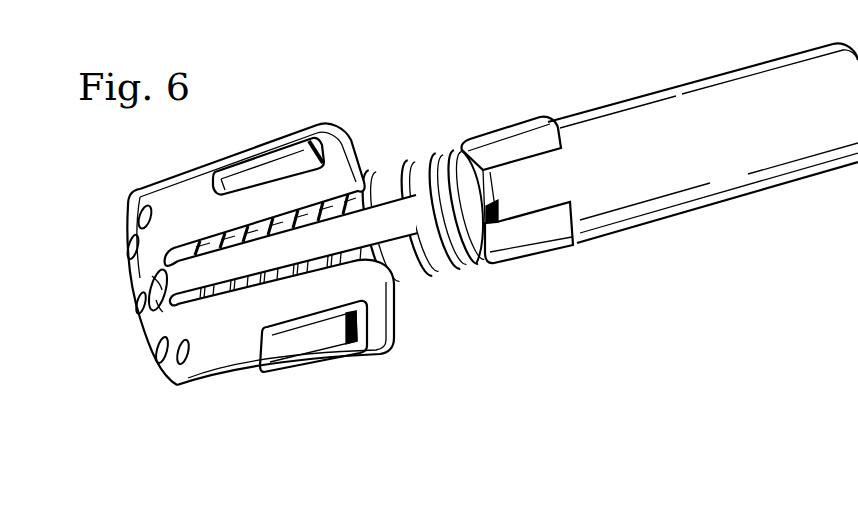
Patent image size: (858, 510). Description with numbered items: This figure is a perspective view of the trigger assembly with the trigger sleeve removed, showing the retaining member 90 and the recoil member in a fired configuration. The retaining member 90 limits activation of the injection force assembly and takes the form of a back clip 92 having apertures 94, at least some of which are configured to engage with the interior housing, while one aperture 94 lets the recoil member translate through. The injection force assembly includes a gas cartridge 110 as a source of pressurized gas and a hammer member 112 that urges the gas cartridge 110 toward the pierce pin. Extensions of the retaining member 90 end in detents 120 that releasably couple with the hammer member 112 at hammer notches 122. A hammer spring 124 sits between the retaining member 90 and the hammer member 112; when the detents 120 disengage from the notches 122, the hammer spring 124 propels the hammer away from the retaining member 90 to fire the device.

The retaining member 90 is at (307, 108).
The back clip 92 is at (170, 190).
The apertures 94 is at (160, 312).
The gas cartridge 110 is at (750, 139).
The hammer member 112 is at (521, 122).
The detents 120 is at (410, 214).
The hammer notches 122 is at (495, 210).
The hammer spring 124 is at (448, 264).